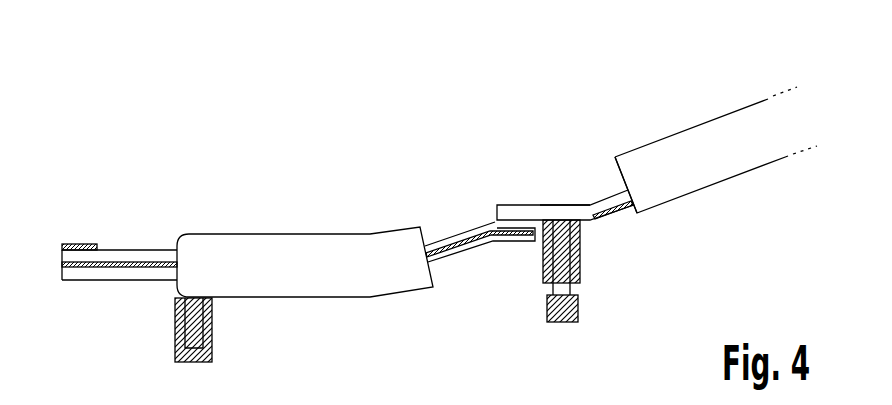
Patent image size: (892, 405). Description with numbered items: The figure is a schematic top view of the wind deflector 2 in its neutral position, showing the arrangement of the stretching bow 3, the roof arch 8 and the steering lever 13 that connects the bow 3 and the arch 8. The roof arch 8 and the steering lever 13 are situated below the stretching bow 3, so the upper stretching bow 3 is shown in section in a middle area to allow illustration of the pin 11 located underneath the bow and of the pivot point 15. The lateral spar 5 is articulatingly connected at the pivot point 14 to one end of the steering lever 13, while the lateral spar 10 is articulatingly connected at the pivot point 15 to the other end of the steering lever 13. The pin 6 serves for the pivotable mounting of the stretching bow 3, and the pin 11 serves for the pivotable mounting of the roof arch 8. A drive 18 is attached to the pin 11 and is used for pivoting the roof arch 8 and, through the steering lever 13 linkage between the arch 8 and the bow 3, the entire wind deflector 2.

The wind deflector 2 is at (74, 178).
The stretching bow 3 is at (281, 226).
The lateral spar 5 is at (140, 257).
The pin 6 is at (211, 331).
The roof arch 8 is at (603, 201).
The lateral spar 10 is at (563, 210).
The pin 11 is at (582, 250).
The steering lever 13 is at (157, 275).
The pivot point 14 is at (97, 284).
The pivot point 15 is at (509, 196).
The drive 18 is at (563, 323).